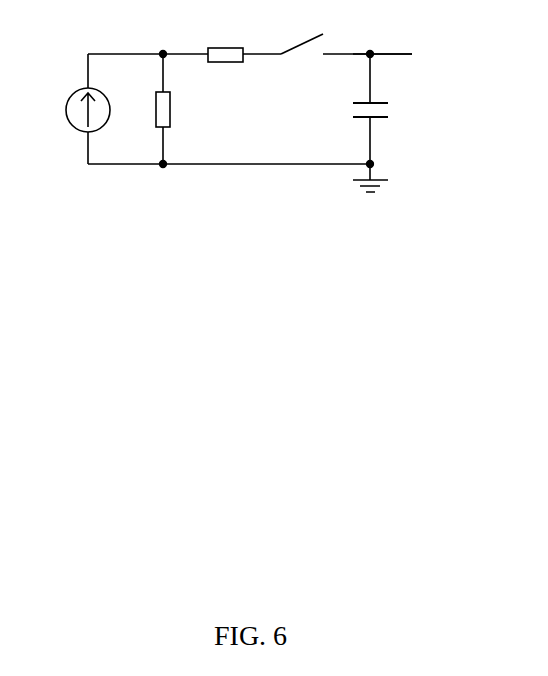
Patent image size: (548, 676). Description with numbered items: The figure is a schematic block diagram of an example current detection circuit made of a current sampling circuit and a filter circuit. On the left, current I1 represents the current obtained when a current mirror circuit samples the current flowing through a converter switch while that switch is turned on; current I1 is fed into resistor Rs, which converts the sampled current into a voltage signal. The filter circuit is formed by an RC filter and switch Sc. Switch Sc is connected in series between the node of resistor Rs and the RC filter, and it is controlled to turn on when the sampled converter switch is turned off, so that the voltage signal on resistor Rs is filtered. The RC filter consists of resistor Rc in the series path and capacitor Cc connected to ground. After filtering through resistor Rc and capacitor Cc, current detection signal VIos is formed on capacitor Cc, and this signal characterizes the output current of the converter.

The current I1 is at (78, 96).
The resistor Rs is at (180, 116).
The resistor Rc is at (225, 37).
The switch Sc is at (302, 57).
The capacitor Cc is at (348, 119).
The current detection signal VIos is at (382, 38).